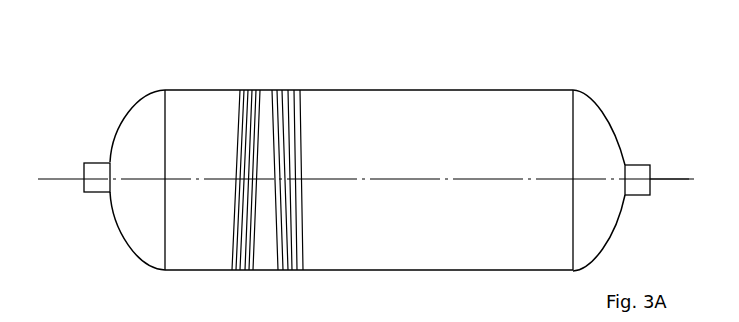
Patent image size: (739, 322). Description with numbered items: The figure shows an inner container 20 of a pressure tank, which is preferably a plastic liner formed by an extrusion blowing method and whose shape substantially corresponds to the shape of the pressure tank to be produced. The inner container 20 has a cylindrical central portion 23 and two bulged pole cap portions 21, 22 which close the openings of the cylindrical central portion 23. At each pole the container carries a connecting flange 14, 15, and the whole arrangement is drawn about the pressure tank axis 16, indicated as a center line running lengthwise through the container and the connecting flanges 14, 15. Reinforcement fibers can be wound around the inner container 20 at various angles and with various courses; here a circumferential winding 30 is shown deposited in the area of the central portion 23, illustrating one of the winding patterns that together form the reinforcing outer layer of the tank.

The inner container 20 is at (364, 138).
The pole cap portion 21 is at (135, 124).
The pole cap portion 22 is at (592, 117).
The cylindrical central portion 23 is at (445, 98).
The connecting flange 14 is at (95, 193).
The connecting flange 15 is at (637, 165).
The pressure tank axis 16 is at (682, 182).
The circumferential winding 30 is at (292, 144).